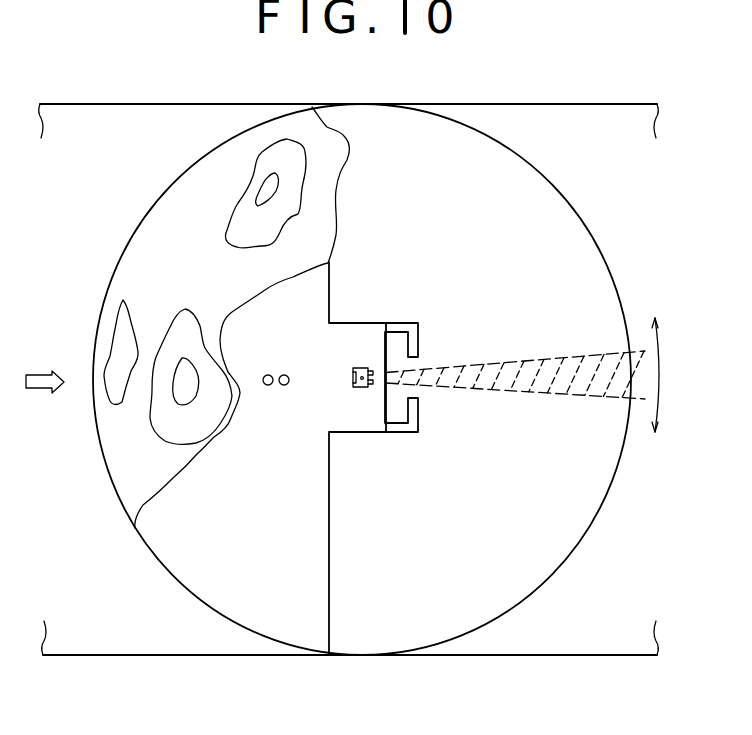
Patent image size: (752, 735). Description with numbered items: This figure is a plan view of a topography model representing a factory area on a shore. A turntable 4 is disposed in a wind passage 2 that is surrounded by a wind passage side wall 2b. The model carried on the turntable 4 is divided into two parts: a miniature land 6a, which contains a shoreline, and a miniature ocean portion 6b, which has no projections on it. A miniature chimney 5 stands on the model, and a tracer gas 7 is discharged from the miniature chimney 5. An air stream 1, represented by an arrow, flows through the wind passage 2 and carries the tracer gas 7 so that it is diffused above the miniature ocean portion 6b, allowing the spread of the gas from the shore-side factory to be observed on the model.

The air stream 1 is at (36, 372).
The wind passage 2 is at (149, 140).
The wind passage side wall 2b is at (571, 103).
The turntable 4 is at (566, 197).
The miniature chimney 5 is at (352, 370).
The miniature land 6a is at (185, 531).
The miniature ocean portion 6b is at (538, 538).
The tracer gas 7 is at (538, 365).